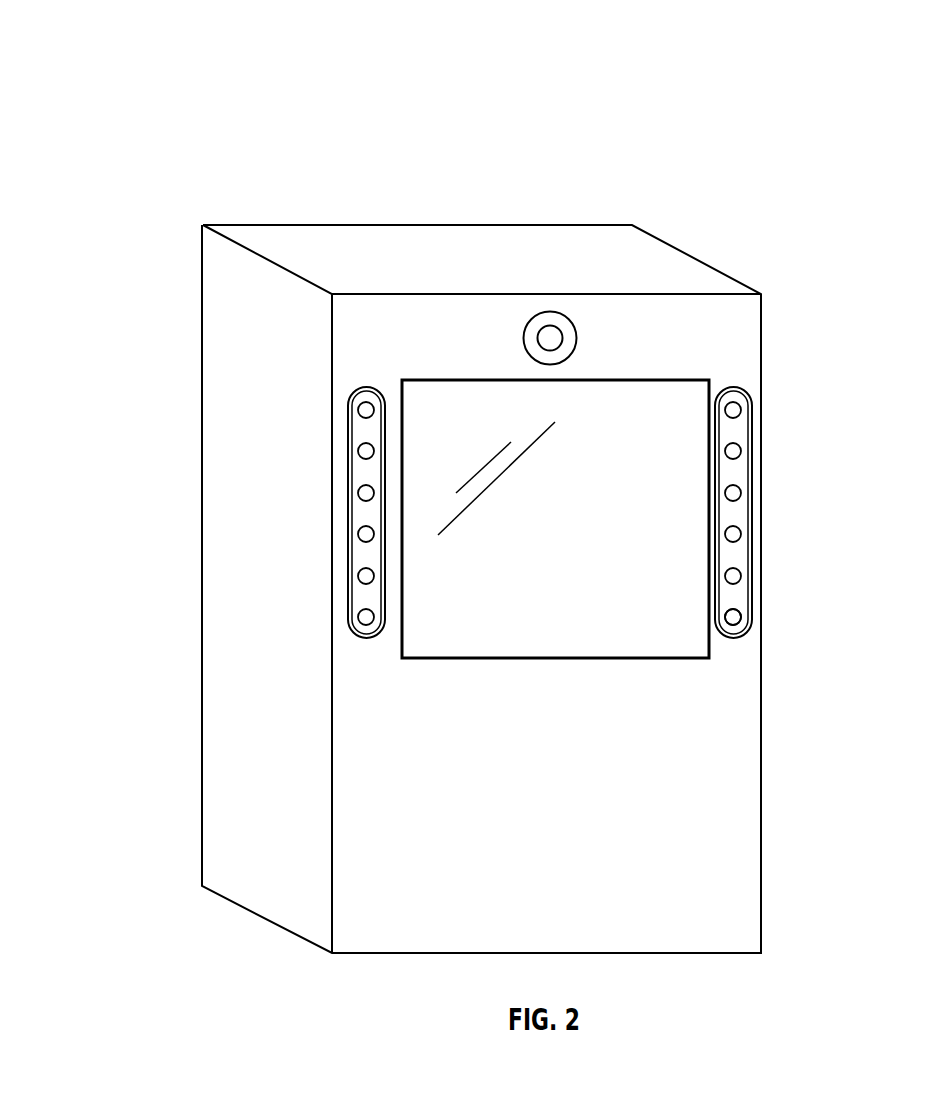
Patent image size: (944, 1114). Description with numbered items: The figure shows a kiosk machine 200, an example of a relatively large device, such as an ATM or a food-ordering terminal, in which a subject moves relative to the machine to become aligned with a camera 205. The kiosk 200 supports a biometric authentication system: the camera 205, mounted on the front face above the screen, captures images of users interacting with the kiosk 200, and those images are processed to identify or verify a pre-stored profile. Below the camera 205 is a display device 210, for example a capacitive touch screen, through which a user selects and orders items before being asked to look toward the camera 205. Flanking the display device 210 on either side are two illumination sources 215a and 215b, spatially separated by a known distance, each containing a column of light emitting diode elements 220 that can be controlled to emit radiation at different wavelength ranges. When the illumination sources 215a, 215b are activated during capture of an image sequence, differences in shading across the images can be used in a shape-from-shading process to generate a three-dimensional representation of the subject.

The kiosk machine 200 is at (140, 138).
The camera 205 is at (548, 325).
The display device 210 is at (477, 392).
The illumination source 215a is at (347, 562).
The illumination source 215b is at (748, 482).
The light emitting diode (LED) element 220 is at (742, 618).